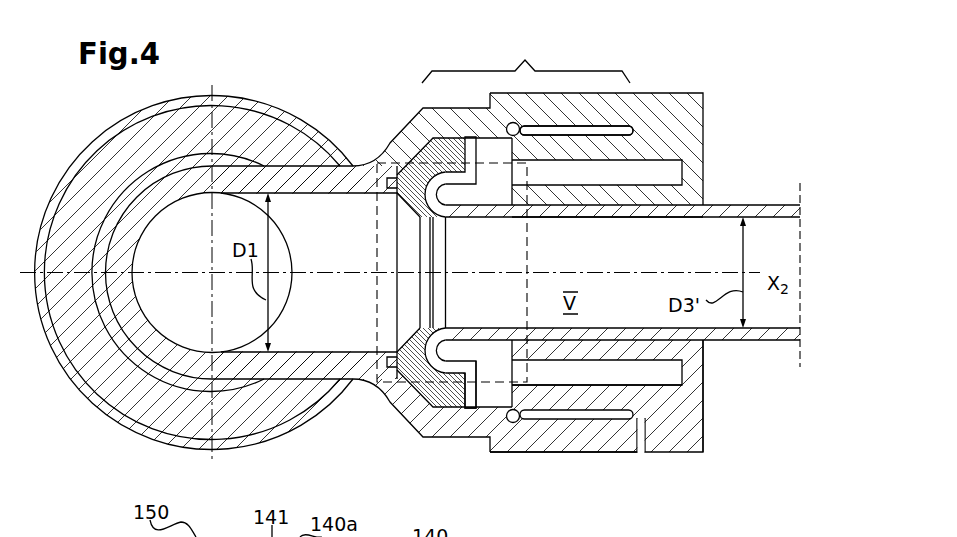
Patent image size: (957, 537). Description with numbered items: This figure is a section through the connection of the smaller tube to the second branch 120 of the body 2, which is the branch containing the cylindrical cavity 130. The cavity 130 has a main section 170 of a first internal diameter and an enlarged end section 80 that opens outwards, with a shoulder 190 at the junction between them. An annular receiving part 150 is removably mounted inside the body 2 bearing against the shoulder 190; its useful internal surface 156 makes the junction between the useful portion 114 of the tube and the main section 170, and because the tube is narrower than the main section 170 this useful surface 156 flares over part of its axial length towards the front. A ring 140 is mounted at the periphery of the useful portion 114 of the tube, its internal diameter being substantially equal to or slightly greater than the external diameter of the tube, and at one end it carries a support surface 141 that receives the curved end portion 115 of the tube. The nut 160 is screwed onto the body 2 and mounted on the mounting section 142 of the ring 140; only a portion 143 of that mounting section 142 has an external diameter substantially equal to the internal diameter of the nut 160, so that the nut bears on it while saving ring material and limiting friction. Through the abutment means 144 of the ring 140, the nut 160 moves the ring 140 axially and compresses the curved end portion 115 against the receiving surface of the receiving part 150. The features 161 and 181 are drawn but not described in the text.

The body 2 is at (160, 178).
The main section 170 is at (287, 191).
The cylindrical cavity 130 is at (358, 330).
The useful internal surface 156 is at (378, 258).
The nut 160 is at (688, 111).
The receiving part 150 is at (418, 141).
The slot 161 is at (600, 125).
The gap 181 is at (576, 130).
The ring 140 is at (705, 195).
The useful portion 114 is at (630, 220).
The shoulder 190 is at (421, 171).
The curved end portion 115 is at (450, 172).
The support surface 141 is at (396, 430).
The abutment means 144 is at (470, 440).
The widened end section 80 is at (526, 61).
The portion of the mounting section 143 is at (706, 362).
The mounting section 142 is at (590, 392).
The second branch 120 is at (505, 453).